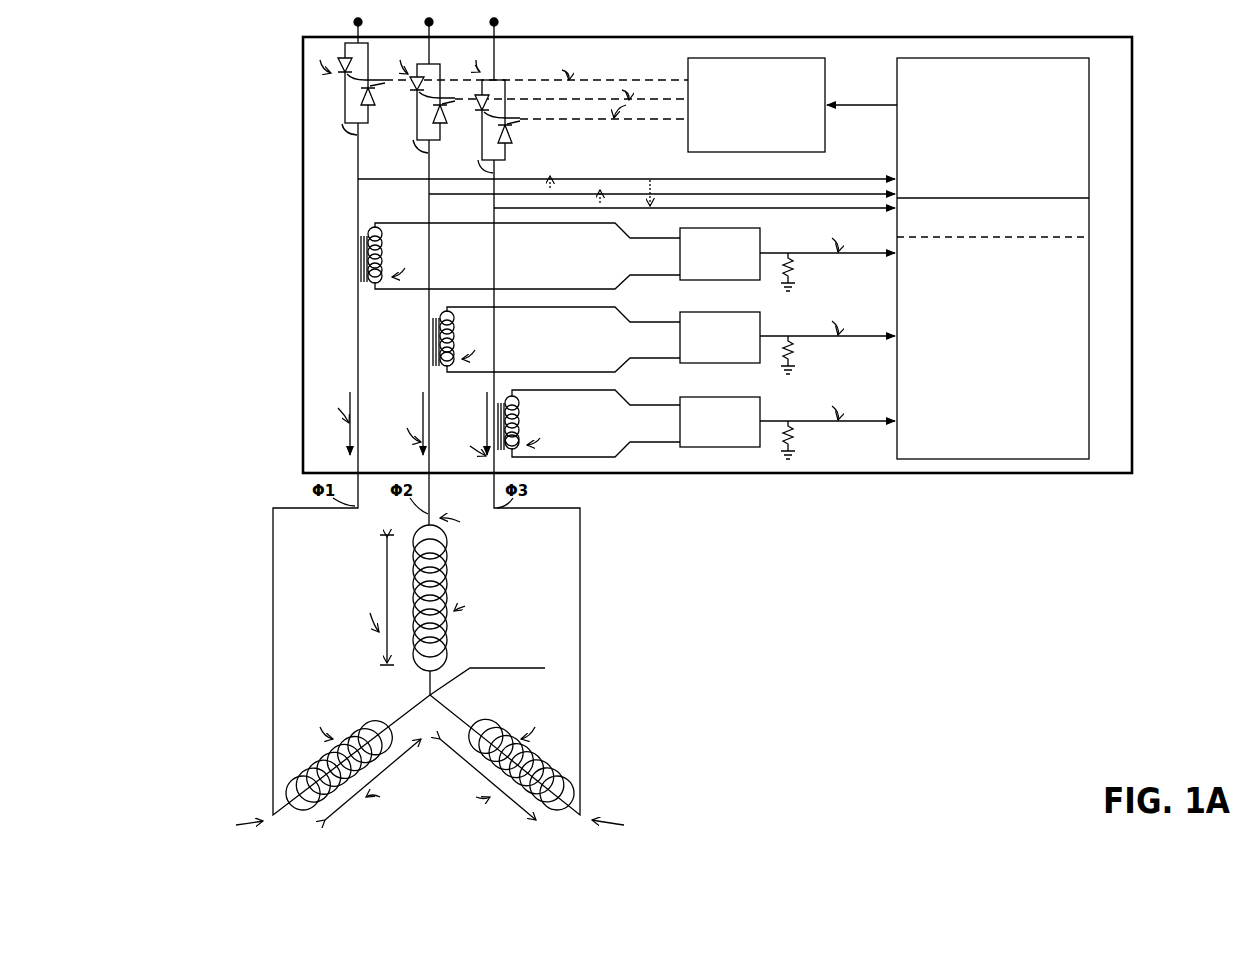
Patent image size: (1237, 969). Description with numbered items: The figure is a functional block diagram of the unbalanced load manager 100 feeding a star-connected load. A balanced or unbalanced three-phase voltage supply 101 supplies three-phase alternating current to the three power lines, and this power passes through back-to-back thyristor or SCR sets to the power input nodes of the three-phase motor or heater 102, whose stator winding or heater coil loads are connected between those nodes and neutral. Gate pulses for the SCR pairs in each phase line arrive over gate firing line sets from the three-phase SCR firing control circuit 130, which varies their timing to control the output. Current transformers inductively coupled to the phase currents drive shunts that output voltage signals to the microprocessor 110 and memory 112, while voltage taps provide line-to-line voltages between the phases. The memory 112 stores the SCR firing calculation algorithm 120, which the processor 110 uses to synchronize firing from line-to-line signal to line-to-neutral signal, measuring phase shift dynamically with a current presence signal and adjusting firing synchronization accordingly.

The unbalanced load manager 100 is at (884, 482).
The balanced or unbalanced three-phase voltage supply 101 is at (343, 21).
The three-phase motor or heater 102 is at (604, 629).
The microprocessor 110 is at (993, 258).
The memory 112 is at (993, 319).
The SCR firing calculation algorithm 120 is at (993, 338).
The three-phase SCR firing control circuit 130 is at (756, 105).